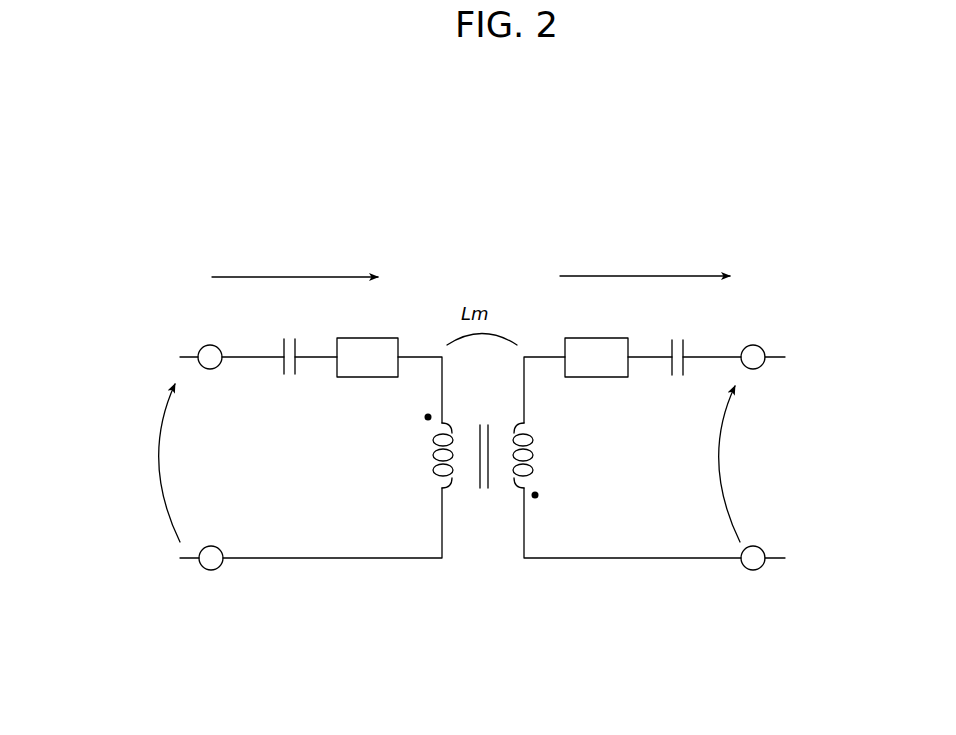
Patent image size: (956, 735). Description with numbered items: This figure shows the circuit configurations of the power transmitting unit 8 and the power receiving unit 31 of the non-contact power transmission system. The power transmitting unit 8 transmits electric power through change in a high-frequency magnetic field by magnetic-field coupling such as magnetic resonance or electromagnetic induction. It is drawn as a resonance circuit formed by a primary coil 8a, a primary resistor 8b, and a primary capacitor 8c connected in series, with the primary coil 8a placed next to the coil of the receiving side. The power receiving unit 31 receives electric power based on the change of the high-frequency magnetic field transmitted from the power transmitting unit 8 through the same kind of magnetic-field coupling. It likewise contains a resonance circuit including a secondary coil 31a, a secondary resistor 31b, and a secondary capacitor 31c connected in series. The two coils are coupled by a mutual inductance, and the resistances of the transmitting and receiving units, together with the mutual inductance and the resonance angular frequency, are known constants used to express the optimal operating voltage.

The power transmitting unit 8 is at (155, 258).
The primary coil 8a is at (450, 487).
The primary resistor 8b is at (392, 338).
The primary capacitor 8c is at (280, 348).
The power receiving unit 31 is at (750, 248).
The secondary coil 31a is at (513, 487).
The secondary resistor 31b is at (567, 340).
The secondary capacitor 31c is at (685, 350).